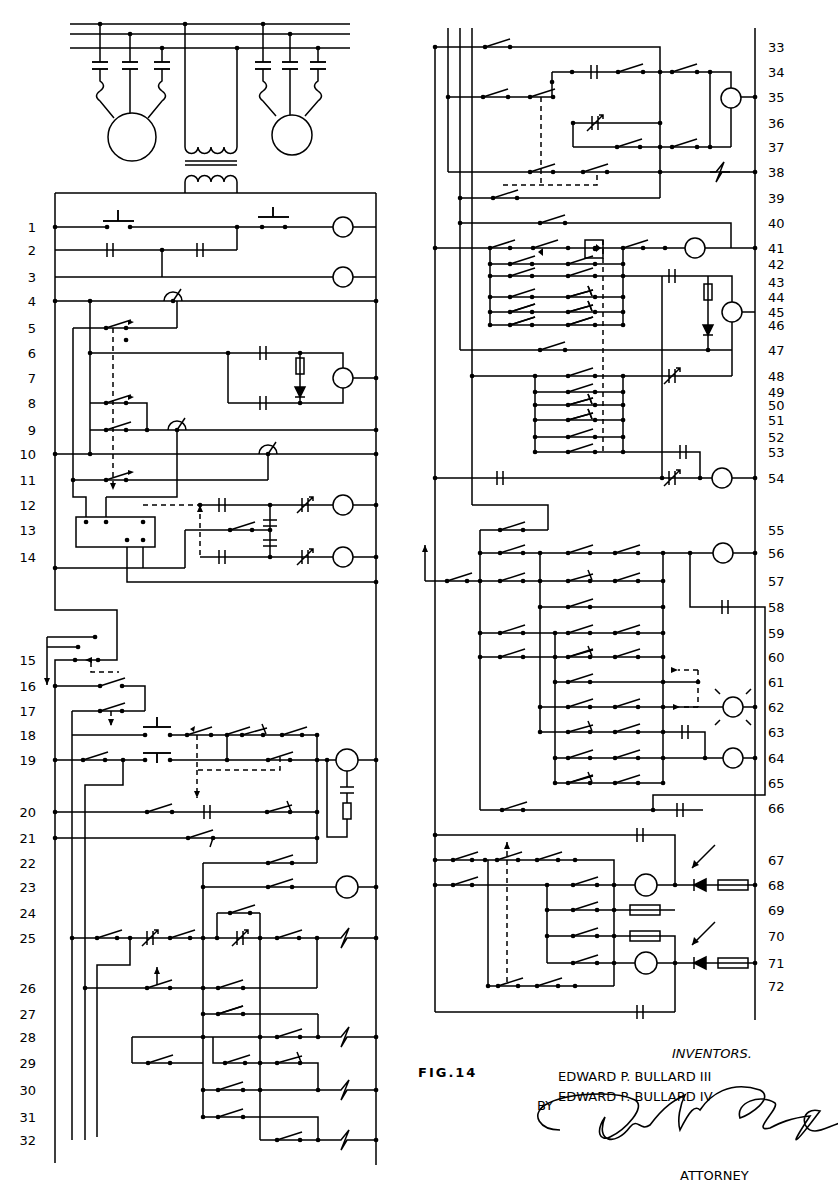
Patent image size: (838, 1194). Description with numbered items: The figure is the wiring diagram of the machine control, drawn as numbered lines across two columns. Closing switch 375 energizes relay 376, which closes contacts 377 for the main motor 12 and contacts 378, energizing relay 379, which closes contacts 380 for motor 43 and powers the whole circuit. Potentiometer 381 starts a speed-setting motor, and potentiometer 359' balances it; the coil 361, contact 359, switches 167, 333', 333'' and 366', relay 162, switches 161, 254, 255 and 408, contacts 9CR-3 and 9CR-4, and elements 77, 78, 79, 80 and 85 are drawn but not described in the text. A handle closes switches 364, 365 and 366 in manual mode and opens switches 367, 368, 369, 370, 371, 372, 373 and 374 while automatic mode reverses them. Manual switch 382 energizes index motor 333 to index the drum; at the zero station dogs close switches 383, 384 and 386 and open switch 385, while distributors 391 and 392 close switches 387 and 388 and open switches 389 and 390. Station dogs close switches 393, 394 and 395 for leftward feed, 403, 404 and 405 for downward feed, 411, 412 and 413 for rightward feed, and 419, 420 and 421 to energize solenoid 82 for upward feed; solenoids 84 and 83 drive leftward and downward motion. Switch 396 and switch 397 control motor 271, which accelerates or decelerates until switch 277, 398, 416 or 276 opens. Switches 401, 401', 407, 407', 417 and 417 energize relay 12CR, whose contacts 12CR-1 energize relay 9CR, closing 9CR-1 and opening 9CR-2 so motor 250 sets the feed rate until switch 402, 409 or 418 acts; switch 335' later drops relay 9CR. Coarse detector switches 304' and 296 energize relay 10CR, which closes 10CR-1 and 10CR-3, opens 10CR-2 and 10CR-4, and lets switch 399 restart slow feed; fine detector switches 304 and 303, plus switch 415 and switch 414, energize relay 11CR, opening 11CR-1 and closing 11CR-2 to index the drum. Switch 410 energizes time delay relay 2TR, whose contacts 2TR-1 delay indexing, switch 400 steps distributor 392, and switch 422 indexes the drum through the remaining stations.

The contacts 377 is at (165, 74).
The contacts 380 is at (255, 72).
The main motor 12 is at (110, 137).
The motor 43 is at (305, 135).
The switch 375 is at (128, 219).
The relay 376 is at (334, 221).
The contacts 378 is at (116, 253).
The relay 379 is at (334, 272).
The potentiometer 381 is at (168, 296).
The relay coil 361 is at (346, 368).
The potentiometer 359' is at (169, 416).
The limit switch 359 is at (244, 451).
The switch 367 is at (124, 683).
The switch 167 is at (102, 707).
The manual switch 382 is at (158, 719).
The switch 383 is at (195, 729).
The switch 387 is at (246, 729).
The switch 388 is at (295, 729).
The index motor 333 is at (340, 753).
The switch 364 is at (104, 750).
The switch 385 is at (286, 756).
The switch 374 is at (156, 810).
The 11CR-2 contacts 11CR-2 is at (200, 814).
The 2TR-1 contacts 2TR-1 is at (266, 812).
The contact 333' is at (217, 835).
The switch 422 is at (282, 862).
The switch 410 is at (282, 886).
The time delay relay 2TR is at (358, 871).
The switch 335' is at (105, 926).
The 11CR-1 contacts 11CR-1 is at (163, 920).
The switch 372 is at (180, 934).
The switch 399 is at (241, 910).
The 10CR-2 contacts 10CR-2 is at (244, 943).
The switch 419 is at (290, 933).
The solenoid 82 is at (346, 933).
The contact 77 is at (233, 987).
The contact 78 is at (234, 1012).
The switch 403 is at (293, 1035).
The solenoid 83 is at (347, 1033).
The switch 366 is at (154, 1054).
The switch 369 is at (246, 1062).
The switch 393 is at (296, 1062).
The contact 79 is at (234, 1088).
The solenoid 84 is at (347, 1085).
The contact 80 is at (234, 1115).
The switch 411 is at (293, 1138).
The solenoid 85 is at (347, 1136).
The switch 365 is at (500, 44).
The 10CR-3 contacts 10CR-3 is at (738, 605).
The switch 398 is at (641, 70).
The switch 276 is at (691, 70).
The motor 271 is at (736, 88).
The switch 368 is at (499, 94).
The switch 396 is at (538, 100).
The 10CR-4 contacts 10CR-4 is at (590, 119).
The switch 416 is at (630, 145).
The switch 277 is at (691, 145).
The switch 397 is at (536, 170).
The solenoid 162 is at (715, 170).
The switch 161 is at (506, 197).
The switch 254 is at (552, 220).
The 12CR relay 12CR is at (713, 219).
The switch 408 is at (514, 246).
The switch 373 is at (641, 246).
The 9CR-1 contacts 9CR-1 is at (675, 273).
The switch 407 is at (622, 292).
The switch 401 is at (622, 307).
The motor 250 is at (705, 315).
The switch 409 is at (515, 317).
The switch 402 is at (523, 316).
The switch 417 is at (585, 462).
The switch 418 is at (516, 347).
The switch 255 is at (556, 350).
The 9CR-2 contacts 9CR-2 is at (690, 366).
The switch 407' is at (624, 402).
The switch 401' is at (624, 420).
The relay contact 9CR-3 is at (688, 447).
The 9CR relay 9CR is at (735, 460).
The 12CR-1 contacts 12CR-1 is at (497, 474).
The relay contact 9CR-4 is at (669, 485).
The switch 371 is at (508, 528).
The switch 420 is at (513, 552).
The switch 366' is at (456, 571).
The 10CR relay 10CR is at (722, 545).
The vertical detector switch 303 is at (585, 577).
The switch 404 is at (512, 584).
The switch 414 is at (588, 603).
The switch 394 is at (512, 630).
The horizontal coarse detector switch 304' is at (595, 648).
The switch 412 is at (510, 664).
The switch 415 is at (586, 681).
The vertical detector switch 296 is at (586, 730).
The 10CR-1 contacts 10CR-1 is at (690, 726).
The horizontal fine detector switch 304 is at (595, 775).
The 11CR relay 11CR is at (735, 769).
The switch 370 is at (517, 797).
The contact 333'' is at (459, 850).
The switch 384 is at (510, 858).
The switch 389 is at (552, 858).
The vertical distributor stepping switch 391 is at (692, 868).
The switch 421 is at (585, 883).
The switch 400 is at (465, 890).
The switch 405 is at (585, 908).
The switch 395 is at (585, 934).
The horizontal distributor stepping switch 392 is at (692, 945).
The switch 413 is at (585, 961).
The switch 386 is at (500, 995).
The switch 390 is at (548, 992).